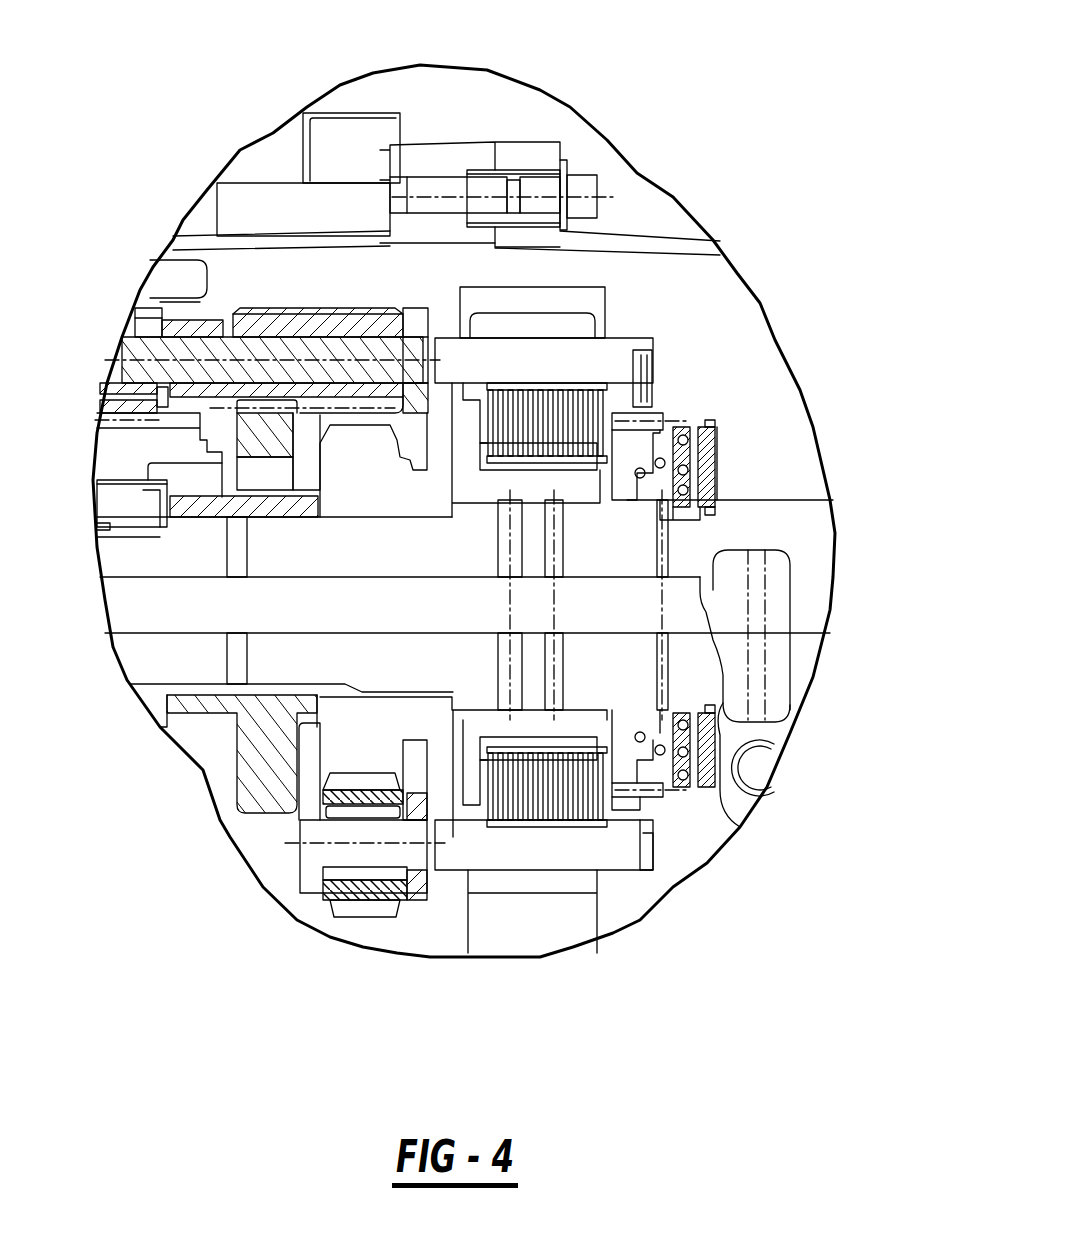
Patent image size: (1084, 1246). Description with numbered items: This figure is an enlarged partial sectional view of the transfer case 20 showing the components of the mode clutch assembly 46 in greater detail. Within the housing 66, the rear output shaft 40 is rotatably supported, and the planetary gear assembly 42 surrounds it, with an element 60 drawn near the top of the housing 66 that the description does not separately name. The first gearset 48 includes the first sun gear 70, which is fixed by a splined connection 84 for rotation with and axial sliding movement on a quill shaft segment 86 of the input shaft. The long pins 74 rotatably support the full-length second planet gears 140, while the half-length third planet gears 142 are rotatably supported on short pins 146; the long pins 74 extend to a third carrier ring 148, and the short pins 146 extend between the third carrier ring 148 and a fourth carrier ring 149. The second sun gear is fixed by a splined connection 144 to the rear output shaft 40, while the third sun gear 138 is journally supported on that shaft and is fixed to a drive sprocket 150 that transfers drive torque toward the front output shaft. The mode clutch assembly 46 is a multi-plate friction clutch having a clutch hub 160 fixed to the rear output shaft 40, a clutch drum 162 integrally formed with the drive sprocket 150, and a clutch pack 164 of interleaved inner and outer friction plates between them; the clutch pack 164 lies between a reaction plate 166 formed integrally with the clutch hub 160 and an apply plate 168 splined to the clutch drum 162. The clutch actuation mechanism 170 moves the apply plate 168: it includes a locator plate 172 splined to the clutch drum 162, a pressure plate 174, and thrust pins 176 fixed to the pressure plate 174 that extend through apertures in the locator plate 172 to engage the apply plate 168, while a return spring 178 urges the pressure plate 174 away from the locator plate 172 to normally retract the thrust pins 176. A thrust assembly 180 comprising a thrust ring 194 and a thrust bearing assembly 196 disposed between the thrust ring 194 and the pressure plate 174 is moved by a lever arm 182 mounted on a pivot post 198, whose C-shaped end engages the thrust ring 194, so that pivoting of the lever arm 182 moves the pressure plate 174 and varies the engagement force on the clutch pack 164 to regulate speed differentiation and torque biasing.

The transfer case 20 is at (635, 88).
The rear output shaft 40 is at (120, 561).
The planetary gear assembly 42 is at (247, 283).
The mode clutch assembly 46 is at (726, 323).
The first gearset 48 is at (172, 285).
The terminal block 60 is at (362, 298).
The housing 66 is at (633, 245).
The first sun gear 70 is at (120, 455).
The long pins 74 is at (148, 355).
The splined connection 84 is at (135, 485).
The quill shaft segment 86 is at (112, 507).
The third sun gear 138 is at (398, 495).
The second planet gears 140 is at (272, 327).
The third planet gears 142 is at (360, 907).
The splined connection 144 is at (258, 525).
The short pins 146 is at (330, 855).
The third carrier ring 148 is at (410, 312).
The fourth carrier ring 149 is at (317, 760).
The drive sprocket 150 is at (580, 327).
The clutch hub 160 is at (478, 487).
The clutch drum 162 is at (625, 352).
The clutch pack 164 is at (580, 747).
The reaction plate 166 is at (462, 762).
The apply plate 168 is at (598, 823).
The clutch actuation mechanism 170 is at (765, 428).
The locator plate 172 is at (621, 475).
The pressure plate 174 is at (668, 805).
The thrust pins 176 is at (643, 797).
The return spring 178 is at (656, 738).
The thrust assembly 180 is at (718, 424).
The lever arm 182 is at (780, 687).
The thrust ring 194 is at (722, 462).
The thrust bearing assembly 196 is at (690, 510).
The pivot post 198 is at (757, 765).